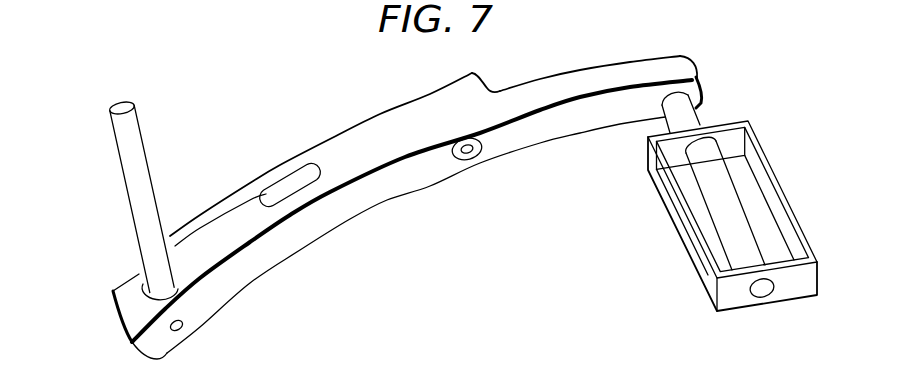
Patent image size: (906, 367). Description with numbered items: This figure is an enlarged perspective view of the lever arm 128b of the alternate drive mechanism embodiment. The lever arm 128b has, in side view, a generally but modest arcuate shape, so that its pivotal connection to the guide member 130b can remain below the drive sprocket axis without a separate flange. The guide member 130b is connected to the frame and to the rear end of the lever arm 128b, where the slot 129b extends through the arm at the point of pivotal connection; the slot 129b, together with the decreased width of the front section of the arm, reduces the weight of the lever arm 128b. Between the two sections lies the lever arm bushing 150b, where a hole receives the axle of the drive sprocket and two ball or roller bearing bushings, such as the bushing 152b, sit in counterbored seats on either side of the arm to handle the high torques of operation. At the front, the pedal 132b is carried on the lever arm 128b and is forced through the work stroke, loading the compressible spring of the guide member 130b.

The lever arm 128b is at (394, 232).
The slot 129b is at (235, 212).
The guide member 130b is at (130, 184).
The pedal 132b is at (778, 173).
The lever arm bushing 150b is at (446, 168).
The roller bearing bushing 152b is at (482, 147).